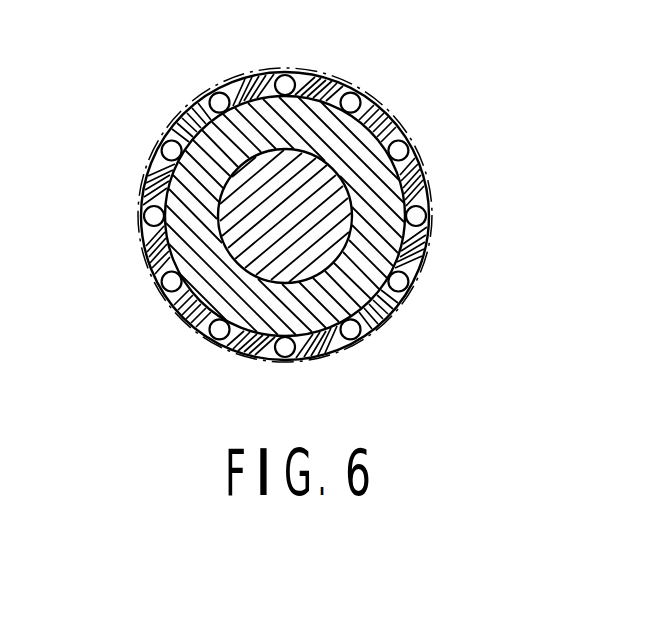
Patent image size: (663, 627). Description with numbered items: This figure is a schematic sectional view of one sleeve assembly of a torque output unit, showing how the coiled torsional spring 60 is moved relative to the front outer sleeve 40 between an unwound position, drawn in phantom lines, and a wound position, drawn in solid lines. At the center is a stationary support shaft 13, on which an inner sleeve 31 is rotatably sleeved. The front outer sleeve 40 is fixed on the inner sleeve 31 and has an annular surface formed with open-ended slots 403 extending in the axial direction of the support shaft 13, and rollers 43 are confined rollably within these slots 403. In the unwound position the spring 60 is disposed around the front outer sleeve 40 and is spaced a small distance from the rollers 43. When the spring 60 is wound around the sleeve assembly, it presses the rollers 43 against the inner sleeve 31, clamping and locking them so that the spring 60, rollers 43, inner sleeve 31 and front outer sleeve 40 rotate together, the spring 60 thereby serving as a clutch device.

The stationary support shaft 13 is at (288, 245).
The inner sleeve 31 is at (380, 202).
The front outer sleeve 40 is at (404, 319).
The roller 43 is at (147, 212).
The open-ended slot 403 is at (148, 256).
The coiled torsional spring 60 is at (338, 82).